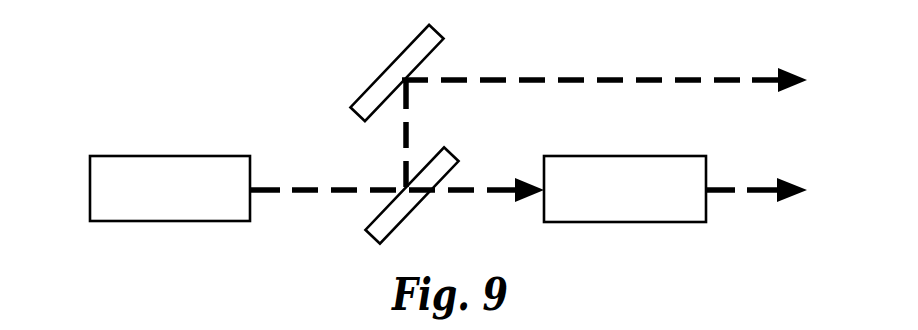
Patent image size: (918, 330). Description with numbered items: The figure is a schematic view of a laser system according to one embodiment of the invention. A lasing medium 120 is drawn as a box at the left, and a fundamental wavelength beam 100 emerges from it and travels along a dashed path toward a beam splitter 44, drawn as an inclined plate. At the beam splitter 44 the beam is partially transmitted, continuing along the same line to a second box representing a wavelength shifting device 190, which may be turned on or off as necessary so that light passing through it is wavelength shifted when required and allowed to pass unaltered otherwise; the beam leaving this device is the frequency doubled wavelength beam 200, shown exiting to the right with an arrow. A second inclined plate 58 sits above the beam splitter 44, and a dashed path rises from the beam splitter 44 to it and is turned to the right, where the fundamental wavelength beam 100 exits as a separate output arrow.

The lasing medium 120 is at (133, 221).
The wavelength shifting device 190 is at (584, 222).
The beam splitter / mirror 58 is at (369, 95).
The beam splitter 44 is at (378, 226).
The fundamental wavelength beam 100 is at (757, 84).
The frequency doubled wavelength beam 200 is at (724, 193).